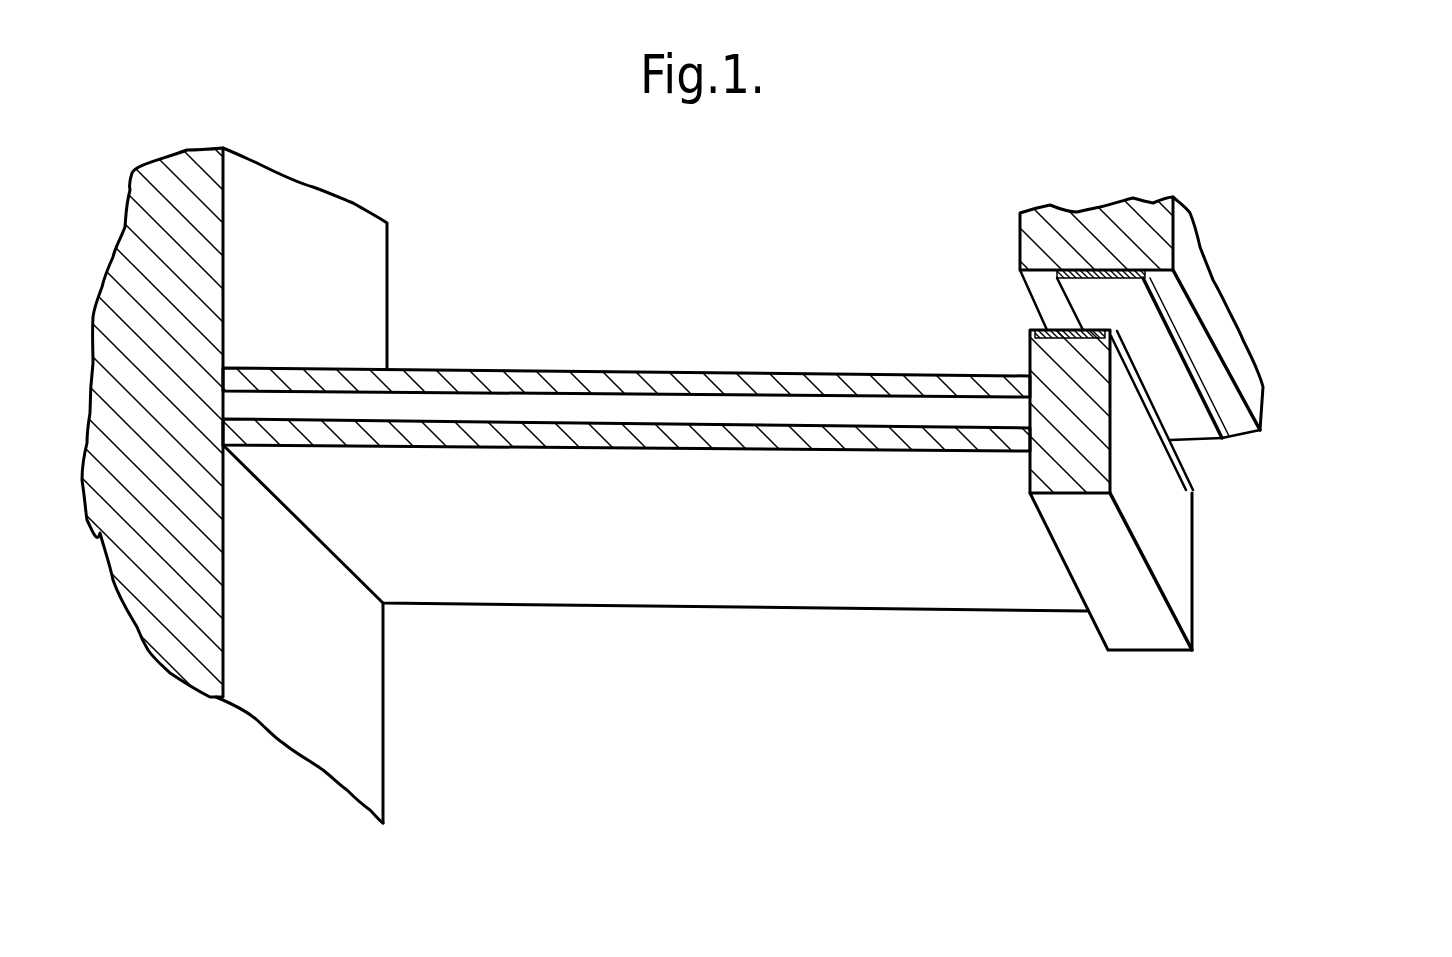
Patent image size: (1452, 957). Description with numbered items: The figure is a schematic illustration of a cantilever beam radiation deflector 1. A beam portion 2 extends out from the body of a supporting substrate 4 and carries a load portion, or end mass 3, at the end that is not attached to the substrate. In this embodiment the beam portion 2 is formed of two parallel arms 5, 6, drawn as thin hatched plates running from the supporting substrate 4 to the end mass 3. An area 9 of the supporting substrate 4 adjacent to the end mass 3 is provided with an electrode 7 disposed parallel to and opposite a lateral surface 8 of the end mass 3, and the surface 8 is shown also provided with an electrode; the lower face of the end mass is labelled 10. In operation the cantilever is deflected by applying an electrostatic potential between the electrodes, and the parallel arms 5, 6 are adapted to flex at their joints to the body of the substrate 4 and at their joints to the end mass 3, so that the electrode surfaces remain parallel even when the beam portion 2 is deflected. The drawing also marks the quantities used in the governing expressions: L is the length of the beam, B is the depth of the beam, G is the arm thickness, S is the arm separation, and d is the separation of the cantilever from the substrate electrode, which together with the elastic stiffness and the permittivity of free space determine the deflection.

The cantilever beam radiation deflector 1 is at (922, 233).
The beam portion 2 is at (678, 510).
The end mass 3 is at (1170, 560).
The supporting substrate 4 is at (347, 283).
The parallel arm 5 is at (877, 378).
The parallel arm 6 is at (918, 435).
The electrode 7 is at (1167, 363).
The lateral surface 8 is at (1187, 467).
The area 9 is at (1218, 400).
The lower face of movable block 10 is at (1145, 630).
The arm separation S is at (663, 422).
The arm thickness G is at (775, 396).
The length of the beam L is at (1107, 671).
The depth of the beam B is at (1117, 493).
The separation of the cantilever from the substrate electrode d is at (1180, 272).